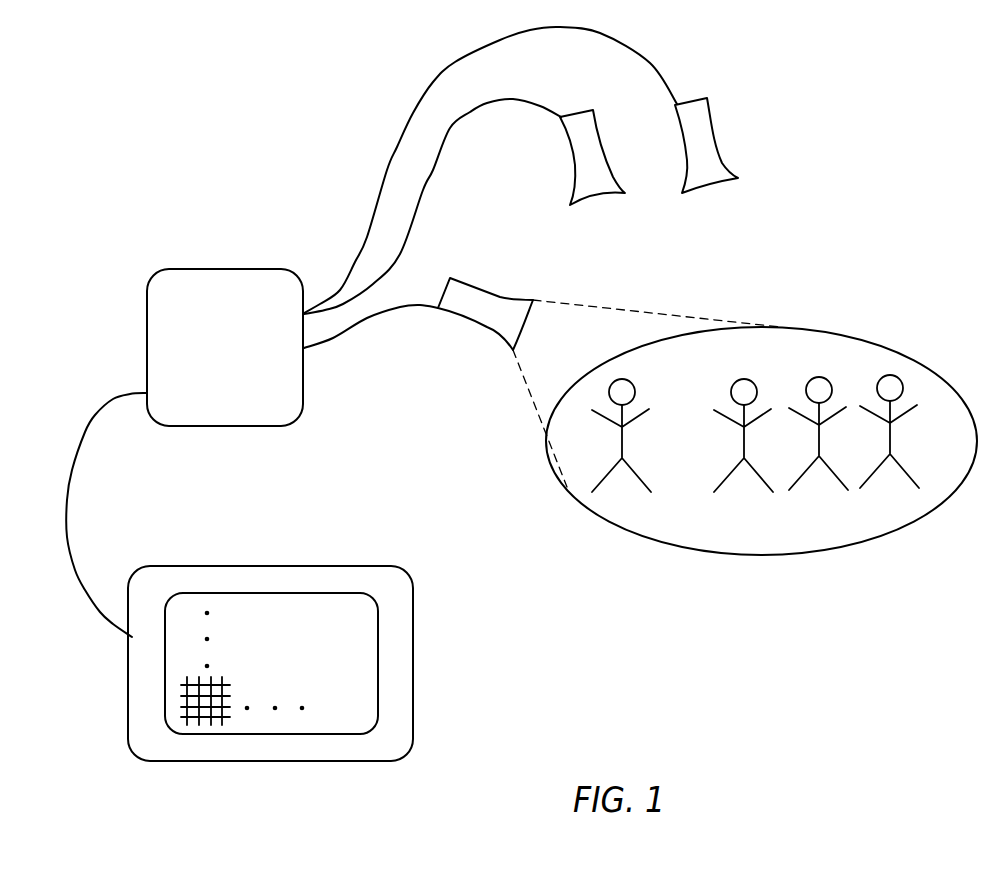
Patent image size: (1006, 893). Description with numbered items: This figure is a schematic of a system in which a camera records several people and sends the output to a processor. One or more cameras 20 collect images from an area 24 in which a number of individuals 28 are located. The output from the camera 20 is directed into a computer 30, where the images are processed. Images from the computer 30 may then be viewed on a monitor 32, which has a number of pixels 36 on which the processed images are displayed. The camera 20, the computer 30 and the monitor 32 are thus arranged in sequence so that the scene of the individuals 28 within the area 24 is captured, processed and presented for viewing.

The camera 20 is at (573, 113).
The area 24 is at (833, 550).
The individuals 28 is at (819, 455).
The computer 30 is at (175, 327).
The monitor 32 is at (398, 670).
The pixels 36 is at (210, 713).